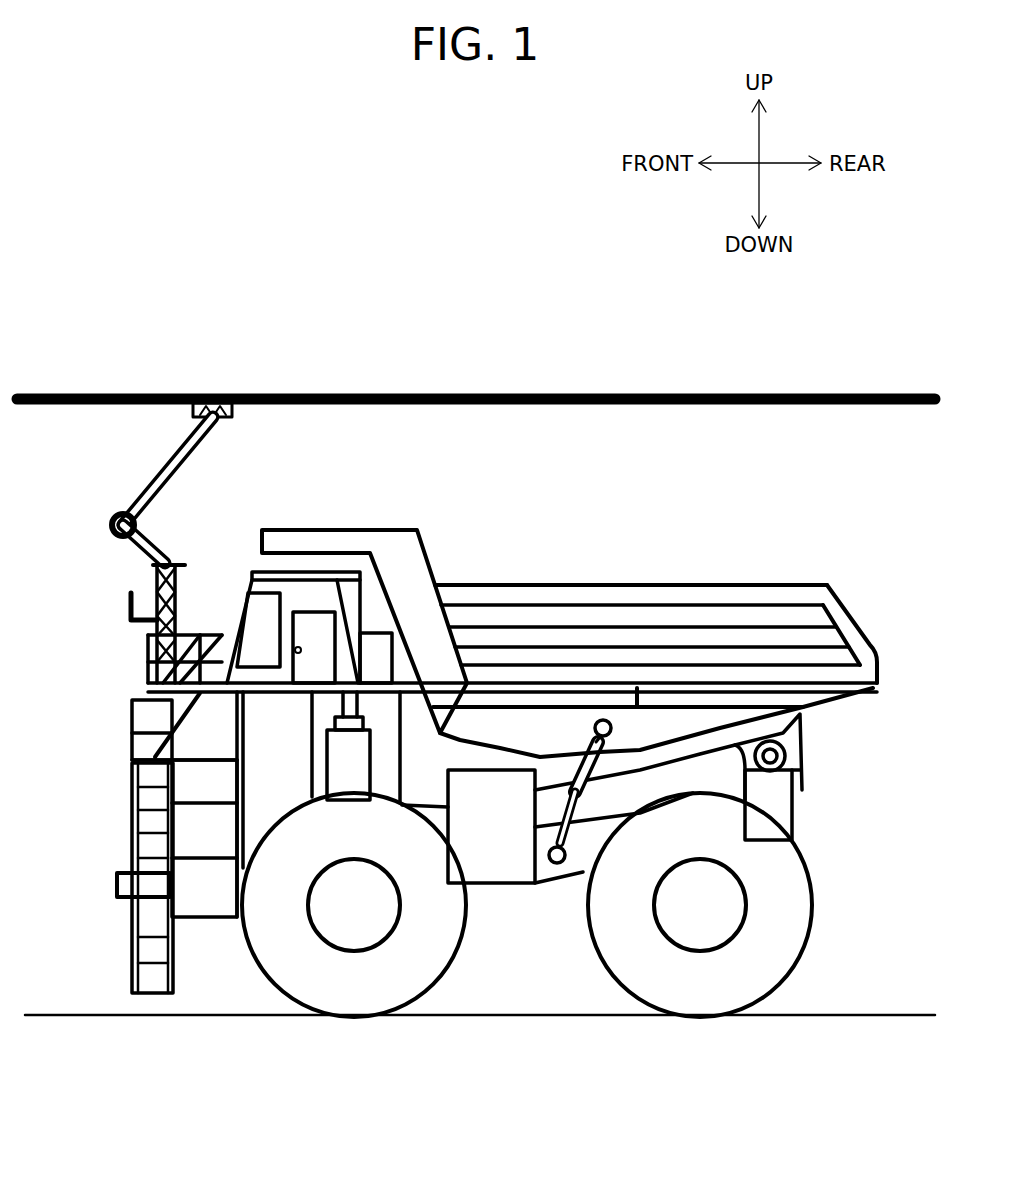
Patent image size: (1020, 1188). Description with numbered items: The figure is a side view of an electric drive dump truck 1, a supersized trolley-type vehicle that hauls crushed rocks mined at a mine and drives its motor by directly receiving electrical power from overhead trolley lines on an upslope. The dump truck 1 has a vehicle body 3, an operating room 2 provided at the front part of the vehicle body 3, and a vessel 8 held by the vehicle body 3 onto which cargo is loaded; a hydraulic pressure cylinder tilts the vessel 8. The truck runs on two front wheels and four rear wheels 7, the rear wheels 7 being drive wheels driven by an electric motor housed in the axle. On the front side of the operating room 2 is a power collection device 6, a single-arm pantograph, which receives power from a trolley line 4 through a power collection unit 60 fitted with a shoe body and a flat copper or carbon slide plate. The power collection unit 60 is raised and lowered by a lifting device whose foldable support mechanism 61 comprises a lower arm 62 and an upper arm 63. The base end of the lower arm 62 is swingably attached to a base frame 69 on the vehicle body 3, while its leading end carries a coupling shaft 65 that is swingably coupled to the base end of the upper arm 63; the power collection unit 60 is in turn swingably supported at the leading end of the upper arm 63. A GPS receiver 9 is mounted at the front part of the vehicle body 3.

The dump truck 1 is at (480, 675).
The operating room 2 is at (245, 576).
The vehicle body 3 is at (438, 748).
The trolley line 4 is at (473, 362).
The power collection device 6 is at (209, 508).
The rear wheels 7 is at (813, 905).
The vessel 8 is at (640, 582).
The GPS receiver 9 is at (127, 608).
The power collection unit 60 is at (247, 402).
The support mechanism 61 is at (153, 503).
The lower arm 62 is at (135, 557).
The upper arm 63 is at (200, 459).
The coupling shaft 65 is at (111, 526).
The base frame 69 is at (177, 604).